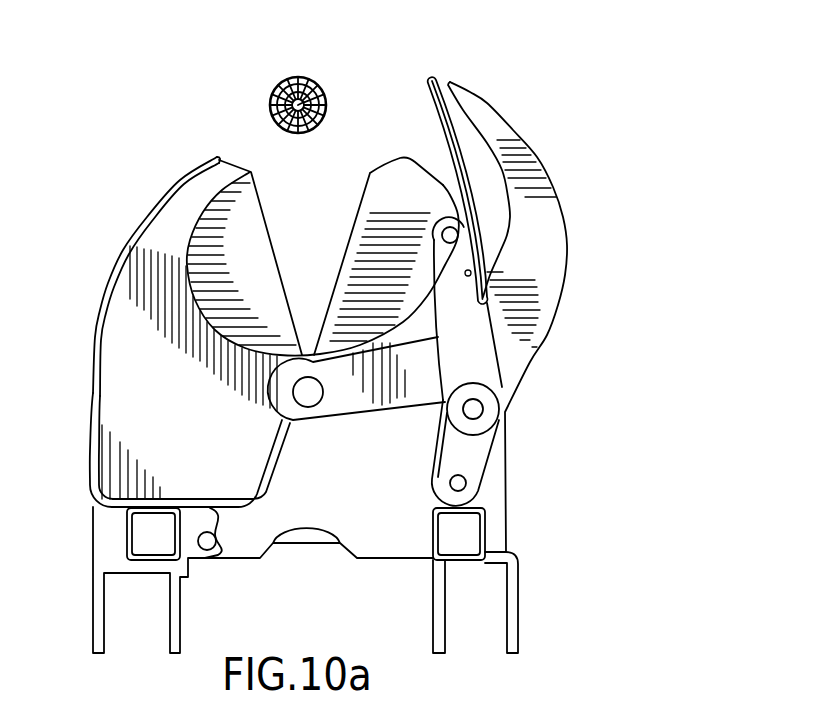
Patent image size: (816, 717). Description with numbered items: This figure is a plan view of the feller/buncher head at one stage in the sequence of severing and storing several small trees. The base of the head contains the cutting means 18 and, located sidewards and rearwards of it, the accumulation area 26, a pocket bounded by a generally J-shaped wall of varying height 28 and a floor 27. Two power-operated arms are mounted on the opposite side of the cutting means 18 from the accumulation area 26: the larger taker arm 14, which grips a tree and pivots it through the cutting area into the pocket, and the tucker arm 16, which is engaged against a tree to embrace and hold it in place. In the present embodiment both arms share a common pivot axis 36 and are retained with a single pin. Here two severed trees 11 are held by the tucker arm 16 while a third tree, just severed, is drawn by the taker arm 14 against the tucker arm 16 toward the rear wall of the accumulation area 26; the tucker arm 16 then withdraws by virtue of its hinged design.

The harvested trees 11 is at (297, 77).
The taker arm 14 is at (553, 238).
The tucker arm 16 is at (437, 122).
The cutting means 18 is at (273, 212).
The accumulation area 26 is at (188, 434).
The floor 27 is at (108, 392).
The J-shaped wall 28 is at (149, 221).
The tucker pivot axis 36 is at (490, 412).